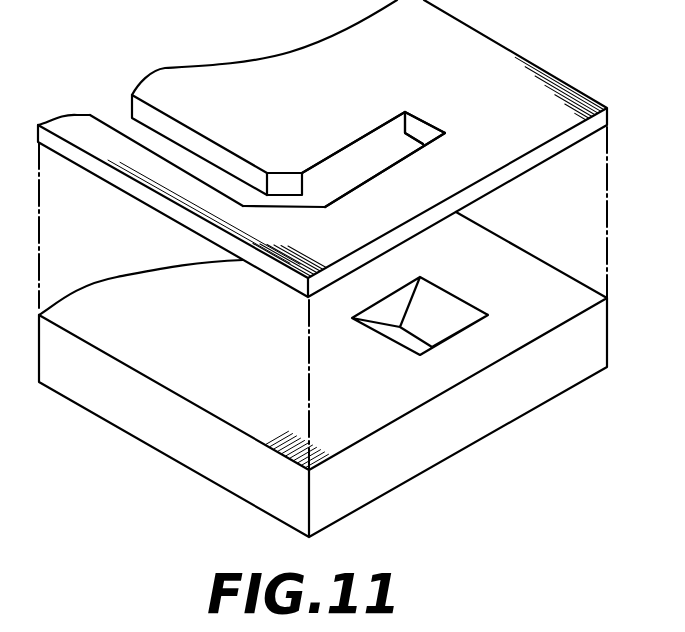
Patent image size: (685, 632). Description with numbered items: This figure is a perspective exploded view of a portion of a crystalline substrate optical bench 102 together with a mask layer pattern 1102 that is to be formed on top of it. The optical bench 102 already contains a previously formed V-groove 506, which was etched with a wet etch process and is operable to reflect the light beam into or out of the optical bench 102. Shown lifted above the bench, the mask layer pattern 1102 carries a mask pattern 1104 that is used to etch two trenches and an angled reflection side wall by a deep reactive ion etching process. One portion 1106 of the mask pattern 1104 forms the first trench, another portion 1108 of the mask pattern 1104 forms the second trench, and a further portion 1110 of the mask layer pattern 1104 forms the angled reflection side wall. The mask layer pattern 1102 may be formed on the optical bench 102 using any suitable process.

The crystalline substrate optical bench 102 is at (271, 477).
The V-groove 506 is at (430, 312).
The mask layer pattern 1102 is at (553, 72).
The mask pattern 1104 is at (202, 113).
The portion of the mask pattern 1106 is at (112, 106).
The portion of the mask pattern 1108 is at (358, 162).
The portion of the mask layer pattern 1110 is at (288, 207).